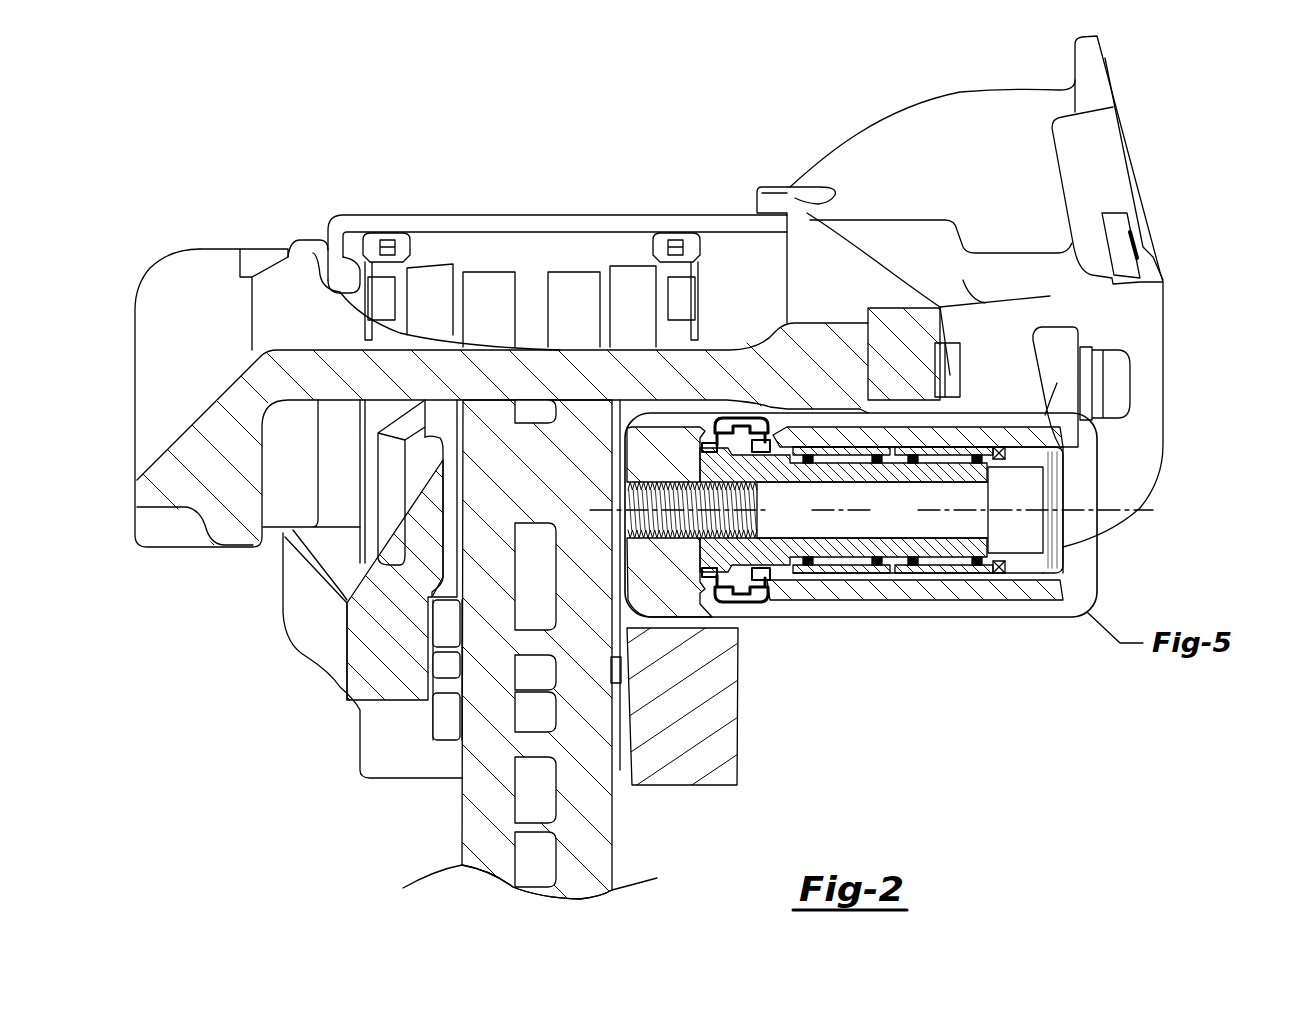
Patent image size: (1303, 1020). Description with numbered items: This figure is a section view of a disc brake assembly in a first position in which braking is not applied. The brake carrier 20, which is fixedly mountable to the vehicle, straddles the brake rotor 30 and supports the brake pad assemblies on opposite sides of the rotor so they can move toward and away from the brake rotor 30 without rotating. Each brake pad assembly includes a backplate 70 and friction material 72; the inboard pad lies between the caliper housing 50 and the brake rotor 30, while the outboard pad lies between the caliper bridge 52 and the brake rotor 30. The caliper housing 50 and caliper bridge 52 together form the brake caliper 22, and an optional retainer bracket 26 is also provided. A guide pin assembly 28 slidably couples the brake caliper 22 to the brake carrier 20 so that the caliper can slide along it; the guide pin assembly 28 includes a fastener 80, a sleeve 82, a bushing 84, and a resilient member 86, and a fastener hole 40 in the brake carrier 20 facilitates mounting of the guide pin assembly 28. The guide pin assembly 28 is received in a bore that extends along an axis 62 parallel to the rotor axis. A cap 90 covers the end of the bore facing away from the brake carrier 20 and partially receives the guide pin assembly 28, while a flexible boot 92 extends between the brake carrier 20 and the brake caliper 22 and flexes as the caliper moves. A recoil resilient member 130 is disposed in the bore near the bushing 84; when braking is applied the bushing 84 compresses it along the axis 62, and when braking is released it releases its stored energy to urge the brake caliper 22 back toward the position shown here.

The brake carrier 20 is at (738, 708).
The brake caliper 22 is at (870, 125).
The retainer bracket 26 is at (569, 213).
The guide pin assembly 28 is at (1070, 487).
The brake rotor 30 is at (463, 817).
The fastener hole 40 is at (645, 492).
The caliper housing 50 is at (1163, 345).
The caliper bridge 52 is at (135, 393).
The axis 62 is at (1143, 510).
The backplate 70 is at (393, 318).
The friction material 72 is at (442, 316).
The fastener 80 is at (799, 523).
The sleeve 82 is at (823, 547).
The bushing 84 is at (922, 575).
The resilient member 86 is at (973, 465).
The cap 90 is at (1063, 560).
The flexible boot 92 is at (745, 603).
The recoil resilient member 130 is at (999, 575).